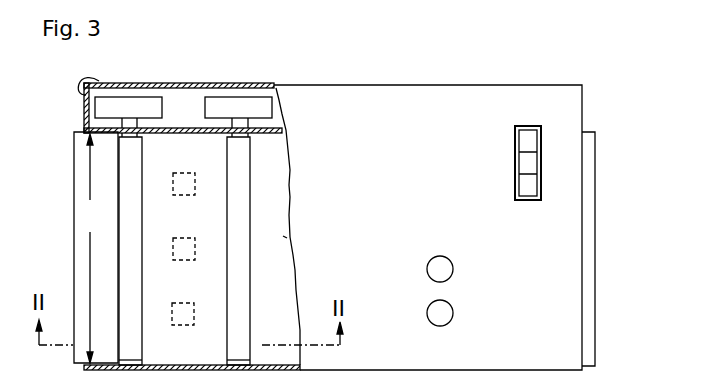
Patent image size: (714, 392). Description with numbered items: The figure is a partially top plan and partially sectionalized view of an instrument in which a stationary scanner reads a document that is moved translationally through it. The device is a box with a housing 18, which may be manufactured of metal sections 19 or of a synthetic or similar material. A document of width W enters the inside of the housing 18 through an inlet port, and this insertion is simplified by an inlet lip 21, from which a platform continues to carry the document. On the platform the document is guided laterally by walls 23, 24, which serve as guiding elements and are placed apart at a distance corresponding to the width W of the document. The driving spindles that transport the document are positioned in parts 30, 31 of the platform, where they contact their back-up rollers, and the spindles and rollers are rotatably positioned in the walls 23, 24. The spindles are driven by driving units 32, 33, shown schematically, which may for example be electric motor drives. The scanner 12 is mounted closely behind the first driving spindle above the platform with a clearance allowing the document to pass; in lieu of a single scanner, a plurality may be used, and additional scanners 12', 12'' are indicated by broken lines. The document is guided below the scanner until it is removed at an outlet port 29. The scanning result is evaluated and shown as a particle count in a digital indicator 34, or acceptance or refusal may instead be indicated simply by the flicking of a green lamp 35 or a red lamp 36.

The scanner 12 is at (196, 168).
The additional scanner 12' is at (199, 235).
The additional scanner 12'' is at (201, 302).
The housing 18 is at (428, 93).
The metal sections 19 is at (166, 94).
The inlet lip 21 is at (73, 225).
The wall 23 is at (273, 133).
The wall 24 is at (165, 365).
The outlet port 29 is at (585, 131).
The part of the platform 30 is at (125, 330).
The part of the platform 31 is at (245, 318).
The driving unit 32 is at (132, 103).
The driving unit 33 is at (237, 103).
The digital indicator 34 is at (515, 174).
The green lamp 35 is at (453, 270).
The red lamp 36 is at (453, 316).